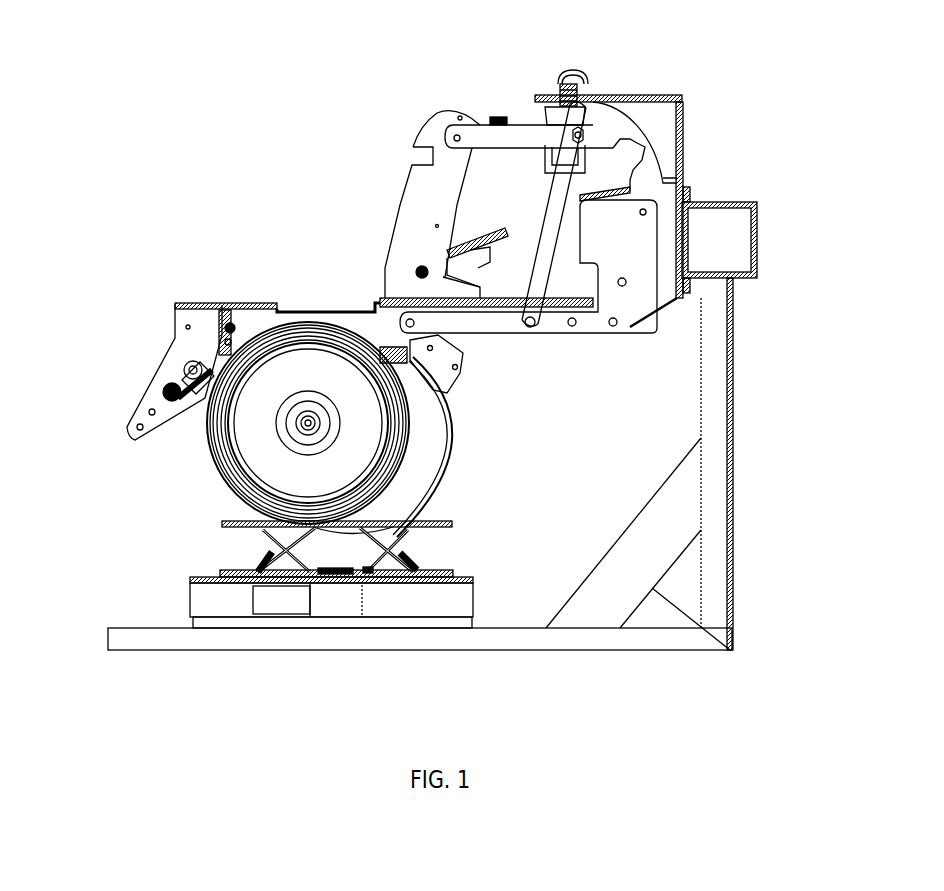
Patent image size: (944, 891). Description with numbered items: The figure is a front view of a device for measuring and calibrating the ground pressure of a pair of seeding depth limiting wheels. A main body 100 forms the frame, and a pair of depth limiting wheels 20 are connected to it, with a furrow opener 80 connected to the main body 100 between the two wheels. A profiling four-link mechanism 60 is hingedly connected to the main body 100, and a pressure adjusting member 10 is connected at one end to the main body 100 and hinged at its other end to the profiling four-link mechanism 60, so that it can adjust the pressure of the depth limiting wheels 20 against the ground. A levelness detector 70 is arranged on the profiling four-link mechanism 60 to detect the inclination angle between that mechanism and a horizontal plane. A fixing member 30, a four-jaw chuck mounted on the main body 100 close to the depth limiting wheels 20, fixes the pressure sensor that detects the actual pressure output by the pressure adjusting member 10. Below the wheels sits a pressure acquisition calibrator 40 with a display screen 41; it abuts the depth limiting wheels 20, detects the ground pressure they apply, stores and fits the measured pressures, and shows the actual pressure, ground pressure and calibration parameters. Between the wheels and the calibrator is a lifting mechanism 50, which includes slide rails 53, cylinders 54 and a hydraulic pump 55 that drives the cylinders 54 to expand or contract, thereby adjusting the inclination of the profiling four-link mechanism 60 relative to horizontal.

The pressure adjusting member 10 is at (580, 113).
The depth limiting wheel 20 is at (270, 437).
The fixing member 30 is at (231, 316).
The pressure acquisition calibrator 40 is at (300, 648).
The display screen 41 is at (278, 603).
The lifting mechanism 50 is at (271, 527).
The slide rail 53 is at (192, 581).
The cylinder 54 is at (263, 563).
The hydraulic pump 55 is at (250, 566).
The profiling four-link mechanism 60 is at (485, 323).
The levelness detector 70 is at (490, 117).
The furrow opener 80 is at (407, 475).
The main body 100 is at (720, 325).